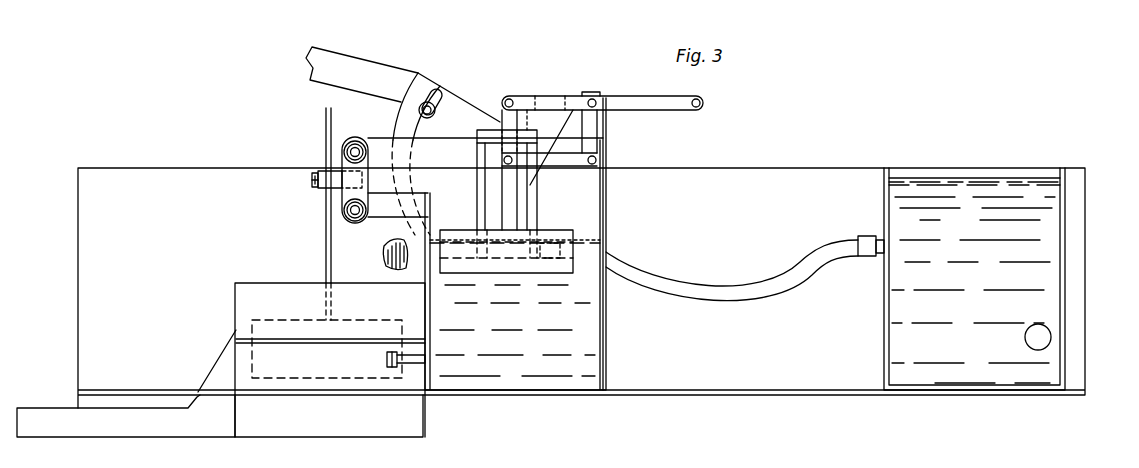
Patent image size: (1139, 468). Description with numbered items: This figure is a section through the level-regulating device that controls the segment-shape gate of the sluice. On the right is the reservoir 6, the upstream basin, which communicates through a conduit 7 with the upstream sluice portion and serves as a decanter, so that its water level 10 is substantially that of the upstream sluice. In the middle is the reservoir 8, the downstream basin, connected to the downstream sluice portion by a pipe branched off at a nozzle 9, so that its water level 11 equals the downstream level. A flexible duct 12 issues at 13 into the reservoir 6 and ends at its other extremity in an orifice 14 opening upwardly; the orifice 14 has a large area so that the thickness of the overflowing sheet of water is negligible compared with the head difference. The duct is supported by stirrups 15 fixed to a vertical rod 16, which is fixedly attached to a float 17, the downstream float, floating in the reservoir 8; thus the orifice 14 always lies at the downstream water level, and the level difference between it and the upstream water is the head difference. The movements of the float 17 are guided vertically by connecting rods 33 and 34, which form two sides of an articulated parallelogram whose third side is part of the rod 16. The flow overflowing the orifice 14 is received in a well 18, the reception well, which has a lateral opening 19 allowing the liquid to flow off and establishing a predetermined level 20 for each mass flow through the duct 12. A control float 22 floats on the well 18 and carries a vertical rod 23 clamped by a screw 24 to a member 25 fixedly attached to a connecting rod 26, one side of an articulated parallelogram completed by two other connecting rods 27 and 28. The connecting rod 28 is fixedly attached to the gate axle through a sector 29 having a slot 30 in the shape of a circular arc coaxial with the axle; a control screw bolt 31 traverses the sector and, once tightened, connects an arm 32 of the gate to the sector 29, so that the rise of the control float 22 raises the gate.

The reservoir 6 is at (1045, 232).
The conduit 7 is at (1050, 334).
The reservoir 8 is at (600, 206).
The nozzle 9 is at (415, 368).
The water level 10 is at (920, 178).
The water level 11 is at (603, 233).
The flexible duct 12 is at (724, 286).
The duct inlet 13 is at (878, 237).
The orifice 14 is at (385, 246).
The stirrups 15 is at (477, 181).
The vertical rod 16 is at (508, 183).
The float 17 is at (460, 224).
The well 18 is at (238, 293).
The lateral opening 19 is at (237, 370).
The predetermined level 20 is at (242, 340).
The control float 22 is at (253, 320).
The vertical rod 23 is at (326, 255).
The screw 24 is at (311, 181).
The member 25 is at (337, 185).
The connecting rod 26 is at (347, 193).
The connecting rod 27 is at (377, 212).
The connecting rod 28 is at (378, 140).
The sector 29 is at (472, 106).
The slot 30 is at (434, 120).
The control screw bolt 31 is at (438, 100).
The arm 32 is at (362, 72).
The connecting rod 33 is at (606, 185).
The connecting rod 34 is at (551, 97).